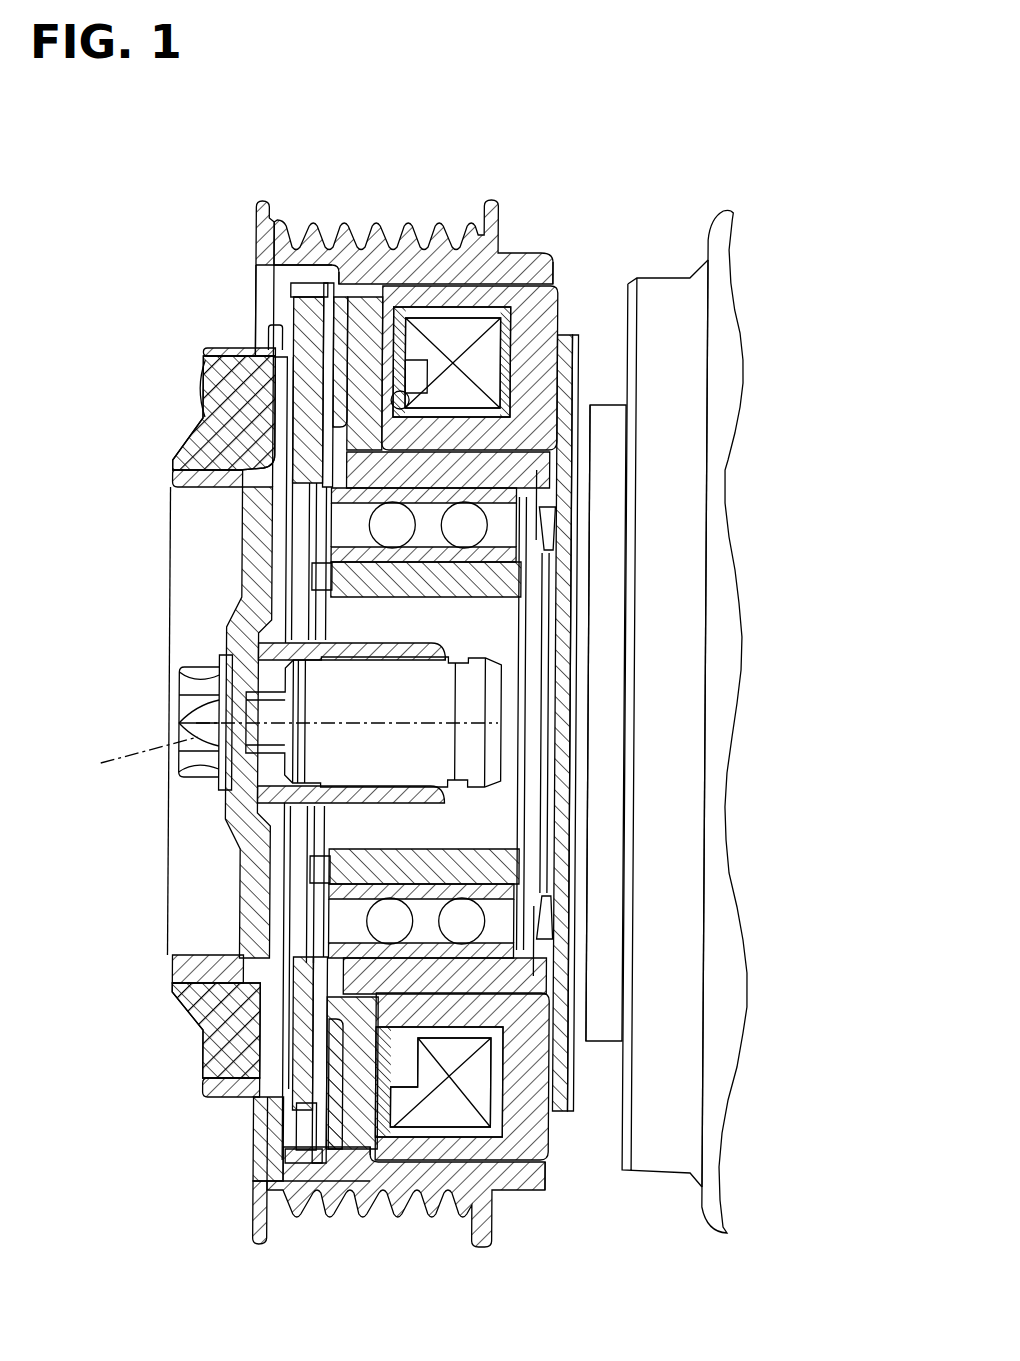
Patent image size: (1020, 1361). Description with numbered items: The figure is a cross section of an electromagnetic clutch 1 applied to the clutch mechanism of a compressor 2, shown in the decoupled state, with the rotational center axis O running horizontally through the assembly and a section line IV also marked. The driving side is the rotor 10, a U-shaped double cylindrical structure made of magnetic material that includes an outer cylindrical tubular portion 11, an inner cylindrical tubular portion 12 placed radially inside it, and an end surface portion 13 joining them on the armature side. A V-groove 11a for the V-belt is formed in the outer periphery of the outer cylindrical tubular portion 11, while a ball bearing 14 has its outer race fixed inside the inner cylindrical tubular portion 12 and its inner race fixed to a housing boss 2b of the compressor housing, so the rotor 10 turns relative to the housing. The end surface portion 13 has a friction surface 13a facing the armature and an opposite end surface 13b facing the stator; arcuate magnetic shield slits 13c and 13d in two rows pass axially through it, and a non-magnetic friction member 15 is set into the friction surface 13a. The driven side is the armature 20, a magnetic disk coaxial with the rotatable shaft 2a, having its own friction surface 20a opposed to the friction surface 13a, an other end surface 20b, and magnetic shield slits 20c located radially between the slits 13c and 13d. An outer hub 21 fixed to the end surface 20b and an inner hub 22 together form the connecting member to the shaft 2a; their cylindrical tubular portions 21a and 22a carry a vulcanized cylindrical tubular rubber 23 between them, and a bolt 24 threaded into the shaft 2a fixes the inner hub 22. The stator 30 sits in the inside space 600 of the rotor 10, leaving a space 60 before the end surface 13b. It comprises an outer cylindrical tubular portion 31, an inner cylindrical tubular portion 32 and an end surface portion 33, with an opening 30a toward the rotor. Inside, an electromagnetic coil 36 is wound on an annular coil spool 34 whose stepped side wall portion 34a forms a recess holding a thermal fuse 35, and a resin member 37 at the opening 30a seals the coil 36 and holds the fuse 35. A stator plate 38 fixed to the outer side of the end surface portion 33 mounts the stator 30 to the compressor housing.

The electromagnetic clutch 1 is at (236, 200).
The compressor 2 is at (709, 216).
The rotatable shaft 2a is at (709, 705).
The housing boss 2b is at (637, 620).
The rotor 10 is at (448, 226).
The outer cylindrical tubular portion 11 is at (399, 232).
The V-groove 11a is at (363, 260).
The inner cylindrical tubular portion 12 is at (284, 508).
The end surface portion 13 is at (240, 410).
The friction surface 13a is at (328, 270).
The other end surface 13b is at (357, 262).
The magnetic shield slit 13c is at (308, 420).
The magnetic shield slit 13d is at (278, 346).
The ball bearing 14 is at (476, 590).
The friction member 15 is at (323, 336).
The armature 20 is at (270, 226).
The friction surface 20a is at (338, 262).
The other end surface 20b is at (262, 300).
The magnetic shield slits 20c is at (281, 398).
The outer hub 21 is at (300, 380).
The cylindrical tubular portion 21a is at (248, 1100).
The inner hub 22 is at (246, 606).
The cylindrical tubular portion 22a is at (238, 956).
The cylindrical tubular rubber 23 is at (218, 1028).
The bolt 24 is at (184, 723).
The stator 30 is at (534, 288).
The opening 30a is at (409, 330).
The outer cylindrical tubular portion 31 is at (478, 490).
The inner cylindrical tubular portion 32 is at (546, 522).
The end surface portion 33 is at (566, 420).
The coil spool 34 is at (608, 490).
The side wall portion 34a is at (592, 390).
The thermal fuse 35 is at (576, 465).
The electromagnetic coil 36 is at (520, 330).
The resin member 37 is at (520, 345).
The stator plate 38 is at (556, 548).
The space 60 is at (215, 472).
The inside space 600 is at (262, 352).
The rotational center axis O is at (282, 749).
The section line IV is at (172, 470).